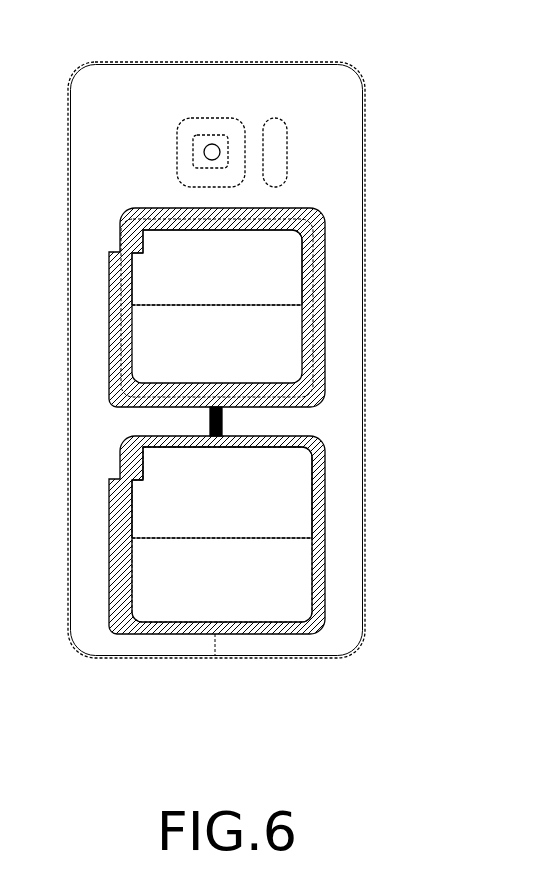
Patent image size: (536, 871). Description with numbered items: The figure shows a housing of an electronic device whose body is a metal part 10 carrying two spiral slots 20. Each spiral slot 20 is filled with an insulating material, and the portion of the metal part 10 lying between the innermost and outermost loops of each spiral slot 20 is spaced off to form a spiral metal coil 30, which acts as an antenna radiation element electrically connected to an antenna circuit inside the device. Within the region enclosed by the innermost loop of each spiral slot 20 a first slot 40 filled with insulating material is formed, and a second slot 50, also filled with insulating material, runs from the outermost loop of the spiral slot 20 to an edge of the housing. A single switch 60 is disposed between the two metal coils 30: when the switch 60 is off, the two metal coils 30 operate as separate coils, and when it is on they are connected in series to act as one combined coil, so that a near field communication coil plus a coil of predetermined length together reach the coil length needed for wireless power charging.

The metal part 10 is at (213, 61).
The spiral slot 20 is at (322, 264).
The metal coil 30 is at (160, 232).
The first slot 40 is at (215, 307).
The second slot 50 is at (215, 656).
The switch 60 is at (222, 427).